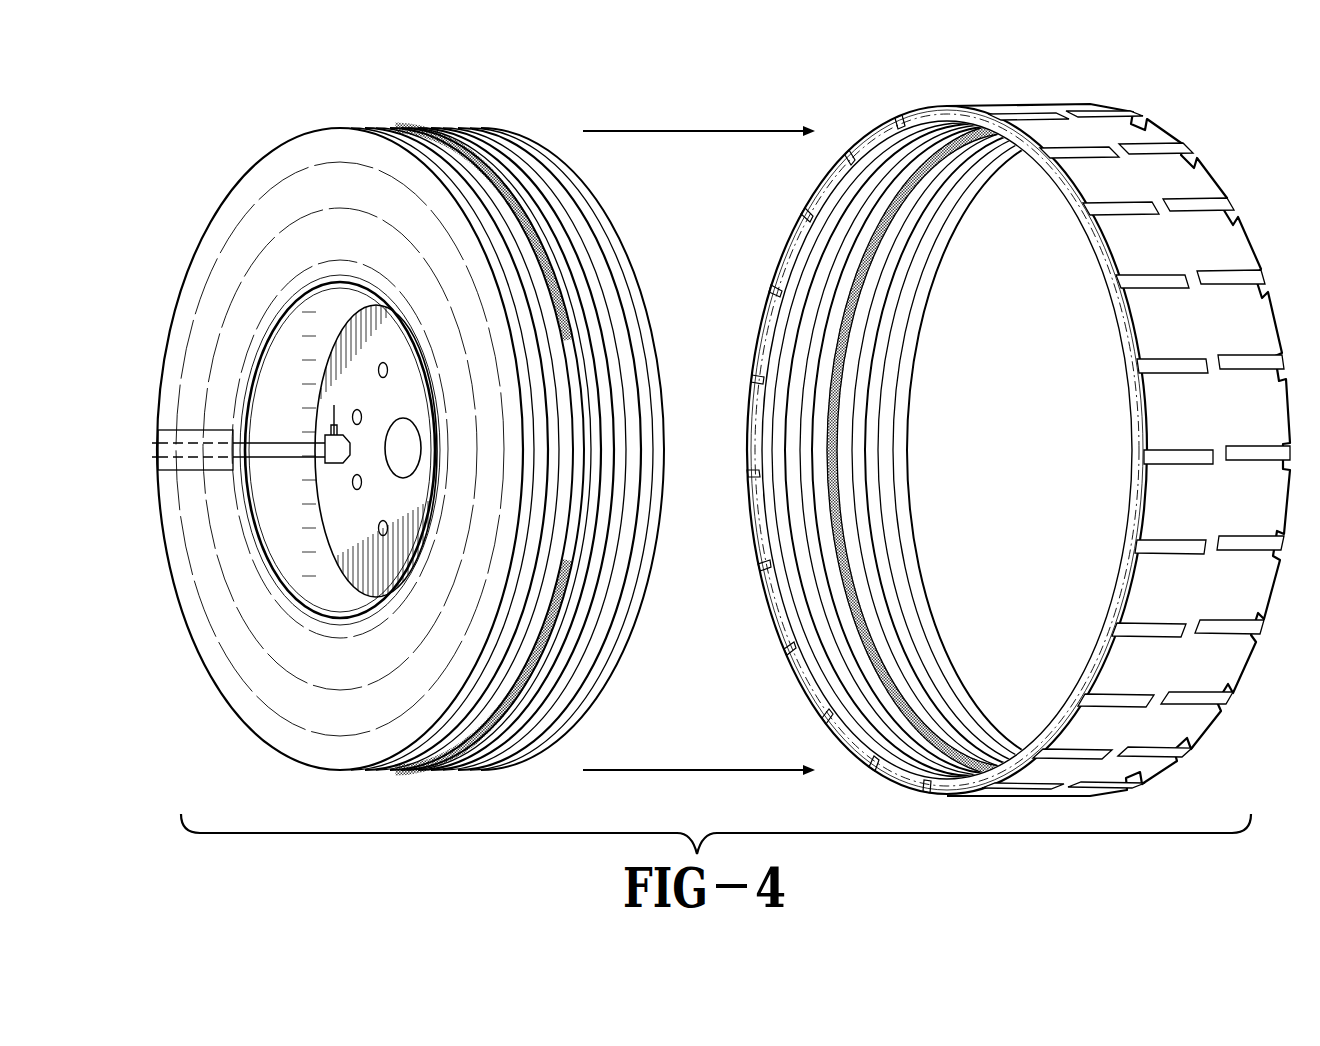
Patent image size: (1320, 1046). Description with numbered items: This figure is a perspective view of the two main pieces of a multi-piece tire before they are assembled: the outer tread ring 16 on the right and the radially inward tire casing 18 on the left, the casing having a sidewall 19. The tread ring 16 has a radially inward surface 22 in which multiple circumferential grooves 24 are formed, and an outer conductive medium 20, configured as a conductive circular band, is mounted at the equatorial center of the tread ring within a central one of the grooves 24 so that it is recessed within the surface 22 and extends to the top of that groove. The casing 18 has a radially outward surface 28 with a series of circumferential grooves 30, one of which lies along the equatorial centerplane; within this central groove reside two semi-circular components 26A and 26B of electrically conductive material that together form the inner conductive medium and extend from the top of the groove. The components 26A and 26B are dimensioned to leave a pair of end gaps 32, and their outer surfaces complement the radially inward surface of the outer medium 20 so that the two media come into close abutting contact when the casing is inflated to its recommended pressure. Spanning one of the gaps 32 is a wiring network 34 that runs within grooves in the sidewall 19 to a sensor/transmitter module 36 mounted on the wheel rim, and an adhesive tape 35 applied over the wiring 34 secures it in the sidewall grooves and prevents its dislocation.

The outer tread ring 16 is at (1028, 434).
The tire casing 18 is at (407, 423).
The sidewall 19 is at (243, 668).
The outer conductive medium 20 is at (930, 165).
The radially inward surface 22 is at (895, 334).
The circumferential grooves 24 is at (877, 392).
The semi-circular component 26A is at (498, 163).
The semi-circular component 26B is at (547, 673).
The radially outward surface 28 is at (570, 224).
The circumferential grooves 30 is at (633, 460).
The end gaps 32 is at (625, 383).
The wiring network 34 is at (180, 442).
The adhesive tape 35 is at (186, 462).
The sensor/transmitter module 36 is at (332, 465).